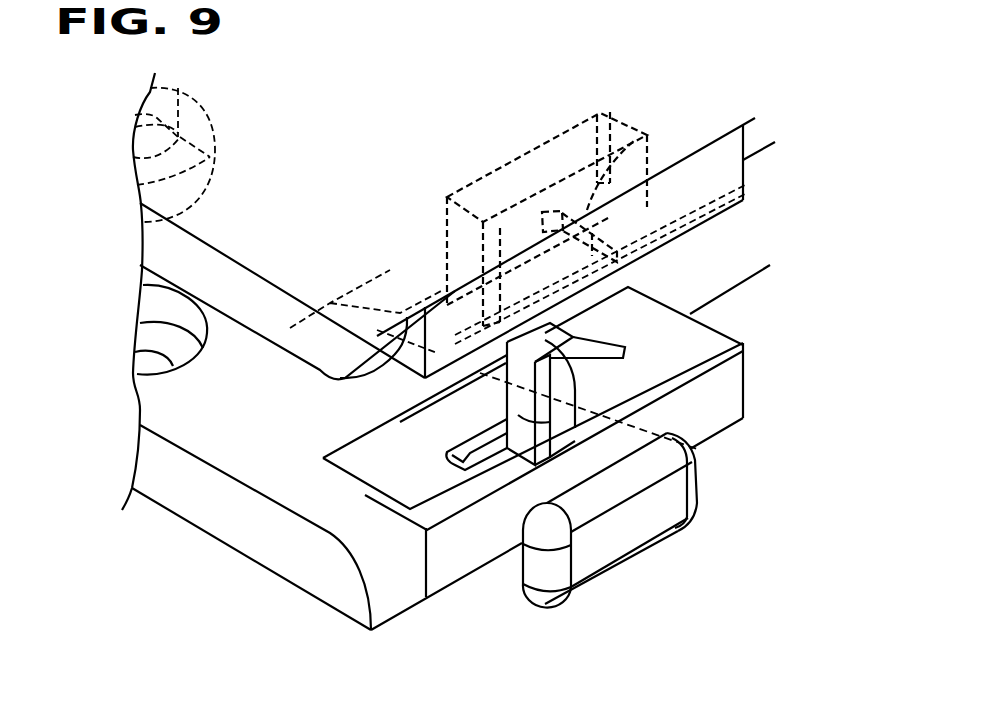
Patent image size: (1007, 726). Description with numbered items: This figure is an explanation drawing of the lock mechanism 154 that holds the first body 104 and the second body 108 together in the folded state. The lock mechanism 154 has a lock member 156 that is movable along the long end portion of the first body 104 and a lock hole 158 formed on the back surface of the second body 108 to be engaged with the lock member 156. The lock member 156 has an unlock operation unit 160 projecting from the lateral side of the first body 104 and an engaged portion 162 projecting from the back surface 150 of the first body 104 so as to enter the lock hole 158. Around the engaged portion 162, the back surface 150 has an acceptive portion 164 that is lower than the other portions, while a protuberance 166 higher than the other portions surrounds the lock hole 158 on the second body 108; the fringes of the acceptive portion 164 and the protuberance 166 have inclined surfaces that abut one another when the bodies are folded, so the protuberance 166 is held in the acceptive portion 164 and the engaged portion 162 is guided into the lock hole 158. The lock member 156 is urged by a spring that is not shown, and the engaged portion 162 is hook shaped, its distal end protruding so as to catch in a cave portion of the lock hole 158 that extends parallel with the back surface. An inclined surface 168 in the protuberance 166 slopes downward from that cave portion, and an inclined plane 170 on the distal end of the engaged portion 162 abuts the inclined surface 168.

The first body 104 is at (467, 548).
The second body 108 is at (735, 212).
The back surface 150 is at (370, 418).
The lock mechanism 154 is at (827, 460).
The lock member 156 is at (600, 465).
The lock hole 158 is at (697, 449).
The unlock operation unit 160 is at (648, 525).
The engaged portion 162 is at (582, 425).
The acceptive portion 164 is at (580, 346).
The protuberance 166 is at (440, 325).
The inclined surface 168 is at (615, 282).
The inclined plane 170 is at (580, 340).